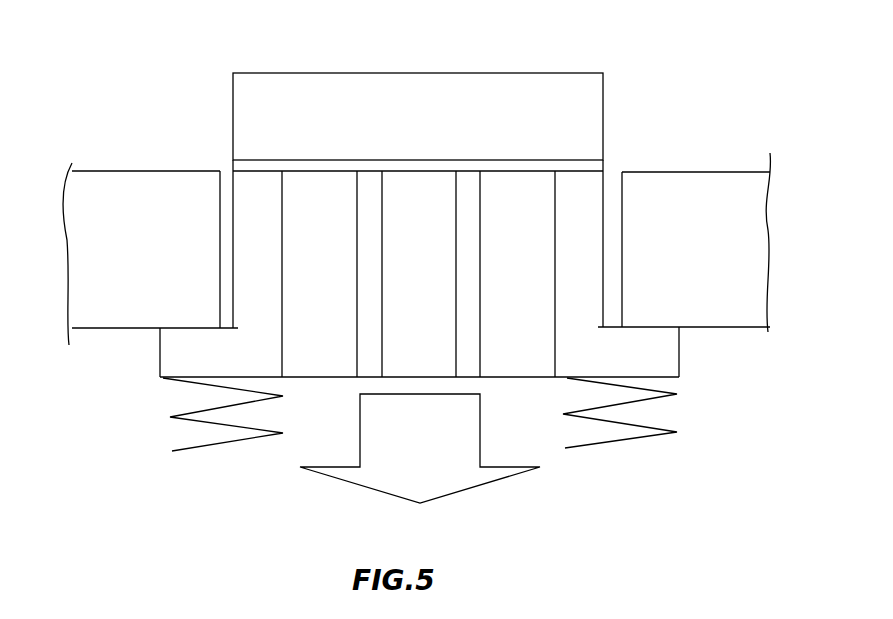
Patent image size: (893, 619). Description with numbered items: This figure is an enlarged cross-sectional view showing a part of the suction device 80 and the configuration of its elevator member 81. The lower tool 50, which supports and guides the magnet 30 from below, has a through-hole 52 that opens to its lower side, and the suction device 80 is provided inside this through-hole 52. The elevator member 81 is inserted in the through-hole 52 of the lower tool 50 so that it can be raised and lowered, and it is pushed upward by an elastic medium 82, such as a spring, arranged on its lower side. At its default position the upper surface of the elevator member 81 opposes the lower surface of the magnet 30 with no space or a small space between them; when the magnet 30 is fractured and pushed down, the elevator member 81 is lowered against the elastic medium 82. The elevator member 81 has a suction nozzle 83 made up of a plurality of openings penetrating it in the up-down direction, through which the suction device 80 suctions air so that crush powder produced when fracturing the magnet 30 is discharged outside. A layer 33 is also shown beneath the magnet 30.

The magnet 30 is at (533, 88).
The adhesive layer 33 is at (398, 167).
The lower tool 50 is at (730, 163).
The through-hole 52 is at (622, 212).
The suction device 80 is at (285, 468).
The elevator member 81 is at (185, 357).
The elastic medium 82 is at (211, 447).
The suction nozzle 83 is at (333, 258).